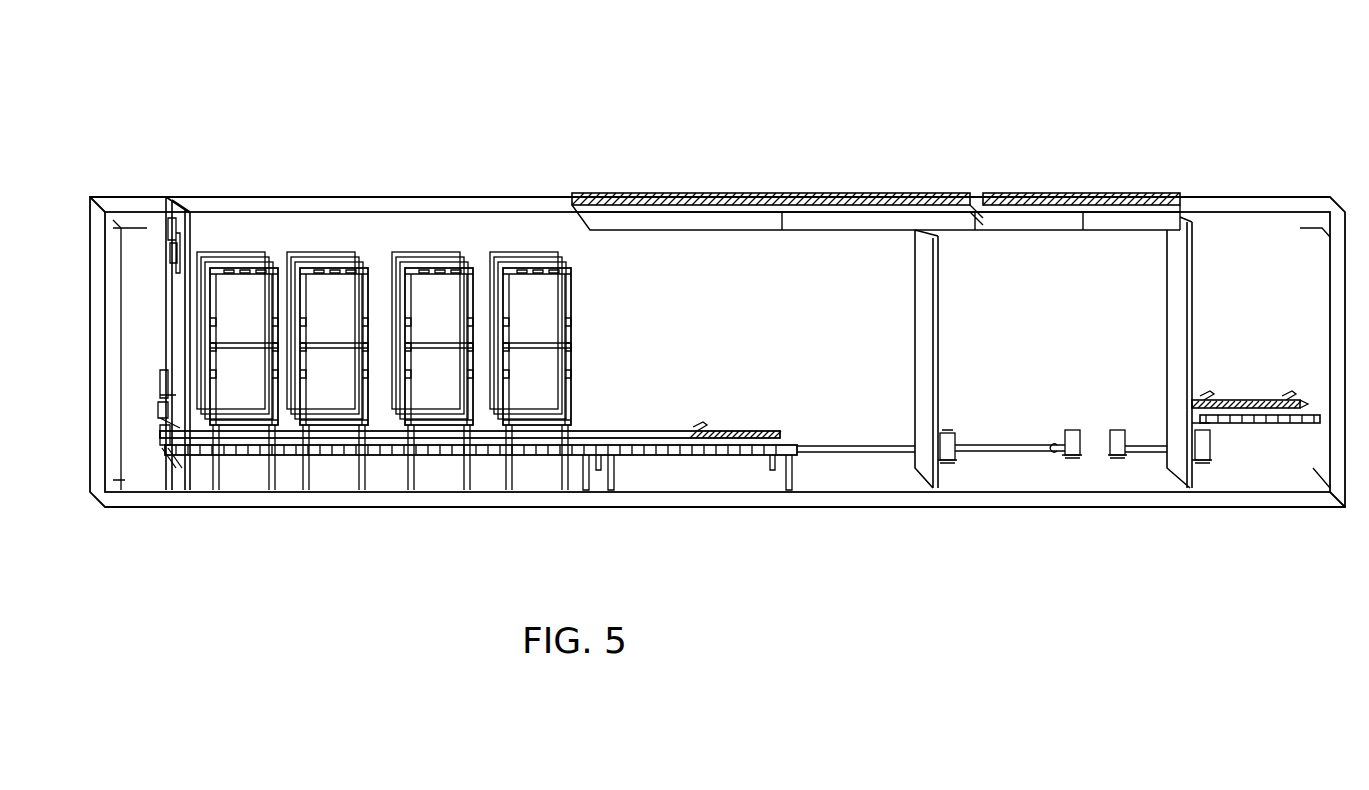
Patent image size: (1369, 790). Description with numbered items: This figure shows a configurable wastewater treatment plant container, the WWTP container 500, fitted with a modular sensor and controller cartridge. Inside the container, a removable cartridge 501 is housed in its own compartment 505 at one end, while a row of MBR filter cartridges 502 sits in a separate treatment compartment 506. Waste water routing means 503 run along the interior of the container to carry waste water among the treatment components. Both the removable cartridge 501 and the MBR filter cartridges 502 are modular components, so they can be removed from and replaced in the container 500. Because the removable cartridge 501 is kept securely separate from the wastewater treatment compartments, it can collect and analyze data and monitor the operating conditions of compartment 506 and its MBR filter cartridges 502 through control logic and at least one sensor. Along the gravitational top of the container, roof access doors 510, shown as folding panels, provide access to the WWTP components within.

The WWTP container 500 is at (537, 486).
The removable cartridge 501 is at (172, 198).
The MBR filter cartridges 502 is at (503, 260).
The waste water routing means 503 is at (1188, 432).
The compartment 505 is at (135, 455).
The compartment 506 is at (778, 262).
The roof access doors 510 is at (1087, 193).